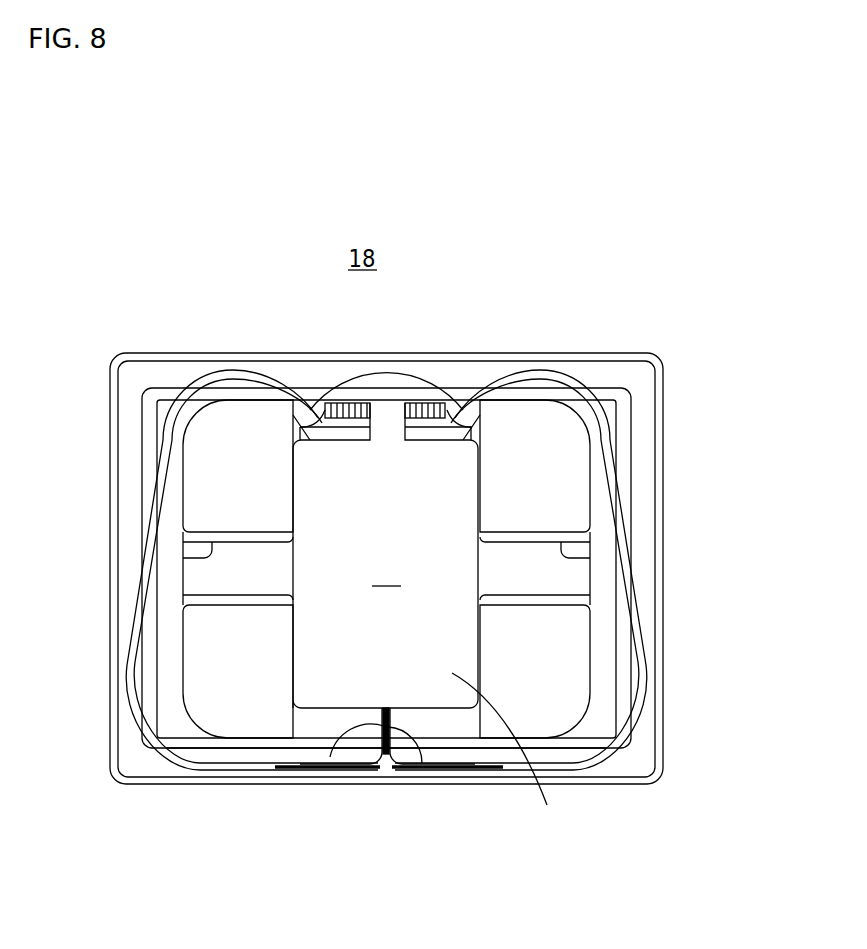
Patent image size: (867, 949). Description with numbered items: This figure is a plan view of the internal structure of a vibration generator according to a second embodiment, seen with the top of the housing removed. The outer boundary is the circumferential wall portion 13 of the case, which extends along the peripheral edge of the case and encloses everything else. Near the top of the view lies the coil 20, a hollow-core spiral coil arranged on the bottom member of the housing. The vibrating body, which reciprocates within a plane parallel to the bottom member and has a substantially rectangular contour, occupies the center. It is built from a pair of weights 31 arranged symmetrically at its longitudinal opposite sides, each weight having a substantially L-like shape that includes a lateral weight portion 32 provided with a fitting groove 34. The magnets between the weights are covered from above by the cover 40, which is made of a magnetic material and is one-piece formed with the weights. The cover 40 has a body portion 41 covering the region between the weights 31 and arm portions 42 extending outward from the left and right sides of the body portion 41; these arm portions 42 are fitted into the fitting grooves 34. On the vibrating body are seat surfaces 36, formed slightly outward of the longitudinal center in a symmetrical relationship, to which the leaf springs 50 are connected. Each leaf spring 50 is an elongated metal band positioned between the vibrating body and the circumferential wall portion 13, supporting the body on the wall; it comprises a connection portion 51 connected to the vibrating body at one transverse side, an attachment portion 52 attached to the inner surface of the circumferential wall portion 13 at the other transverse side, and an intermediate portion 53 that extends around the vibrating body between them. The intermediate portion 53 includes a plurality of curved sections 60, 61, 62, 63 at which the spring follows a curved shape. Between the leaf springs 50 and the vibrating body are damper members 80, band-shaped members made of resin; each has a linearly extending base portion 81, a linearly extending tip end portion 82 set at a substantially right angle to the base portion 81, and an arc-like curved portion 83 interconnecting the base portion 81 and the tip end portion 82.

The circumferential wall portion 13 is at (160, 352).
The coil 20 is at (391, 377).
The weights 31 is at (227, 712).
The lateral weight portion 32 is at (203, 469).
The fitting groove 34 is at (208, 553).
The seat surfaces 36 is at (330, 420).
The cover 40 is at (385, 555).
The body portion 41 is at (516, 748).
The arm portions 42 is at (207, 580).
The leaf springs 50 is at (136, 628).
The connection portion 51 is at (350, 412).
The attachment portion 52 is at (243, 781).
The intermediate portion 53 is at (637, 596).
The curved section 60 is at (314, 406).
The curved section 61 is at (274, 378).
The curved section 62 is at (200, 385).
The curved section 63 is at (140, 712).
The damper members 80 is at (340, 771).
The base portion 81 is at (330, 754).
The tip end portion 82 is at (290, 773).
The arc-like curved portion 83 is at (384, 772).